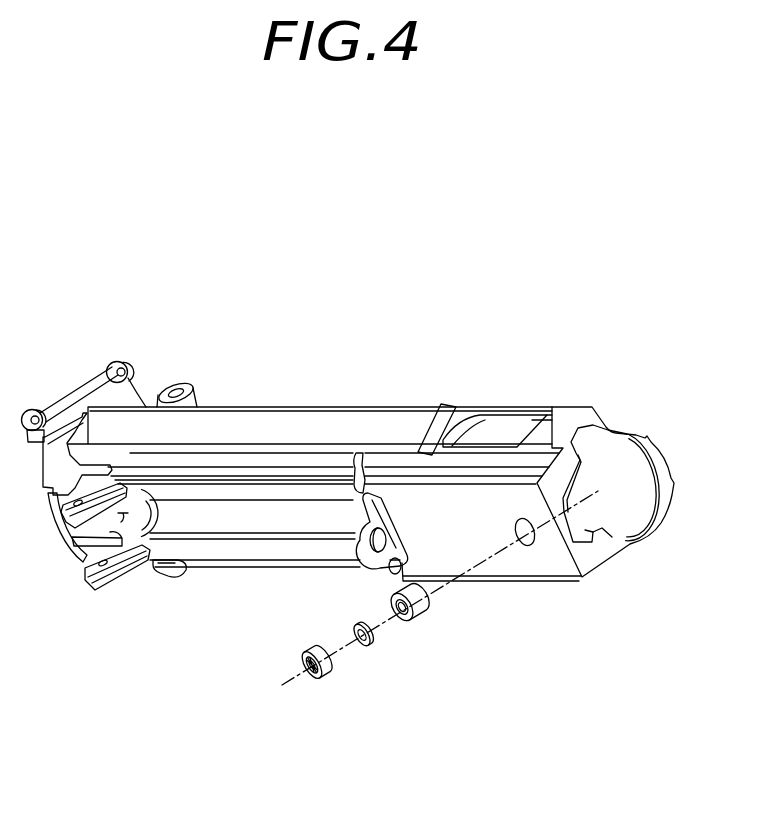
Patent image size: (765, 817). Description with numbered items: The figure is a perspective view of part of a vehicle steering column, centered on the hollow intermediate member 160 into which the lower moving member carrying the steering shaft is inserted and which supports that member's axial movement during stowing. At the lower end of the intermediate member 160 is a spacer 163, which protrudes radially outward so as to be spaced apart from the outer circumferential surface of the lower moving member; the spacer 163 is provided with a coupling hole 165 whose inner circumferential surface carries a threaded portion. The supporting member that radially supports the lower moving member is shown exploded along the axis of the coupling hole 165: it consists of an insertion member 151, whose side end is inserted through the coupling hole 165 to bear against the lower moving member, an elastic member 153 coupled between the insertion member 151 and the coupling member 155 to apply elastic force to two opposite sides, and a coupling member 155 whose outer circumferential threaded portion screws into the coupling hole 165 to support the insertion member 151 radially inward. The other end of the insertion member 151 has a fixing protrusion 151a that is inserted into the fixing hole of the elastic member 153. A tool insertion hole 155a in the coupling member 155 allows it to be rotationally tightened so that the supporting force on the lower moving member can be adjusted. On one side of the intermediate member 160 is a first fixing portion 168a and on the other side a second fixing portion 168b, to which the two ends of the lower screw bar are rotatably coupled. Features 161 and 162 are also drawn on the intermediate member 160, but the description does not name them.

The intermediate member 160 is at (283, 420).
The circular opening 161 is at (620, 491).
The rocker lever 162 is at (66, 535).
The spacer 163 is at (575, 573).
The coupling hole 165 is at (527, 548).
The first fixing portion 168a is at (370, 566).
The second fixing portion 168b is at (112, 578).
The insertion member 151 is at (423, 610).
The fixing protrusion 151a is at (404, 614).
The elastic member 153 is at (358, 672).
The coupling member 155 is at (307, 694).
The tool insertion hole 155a is at (304, 662).